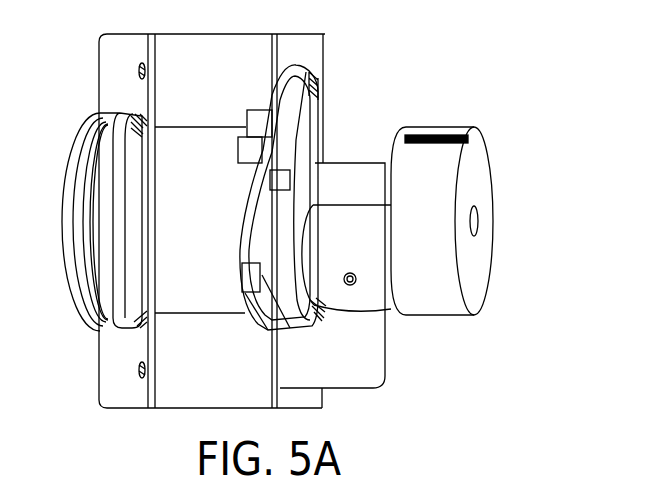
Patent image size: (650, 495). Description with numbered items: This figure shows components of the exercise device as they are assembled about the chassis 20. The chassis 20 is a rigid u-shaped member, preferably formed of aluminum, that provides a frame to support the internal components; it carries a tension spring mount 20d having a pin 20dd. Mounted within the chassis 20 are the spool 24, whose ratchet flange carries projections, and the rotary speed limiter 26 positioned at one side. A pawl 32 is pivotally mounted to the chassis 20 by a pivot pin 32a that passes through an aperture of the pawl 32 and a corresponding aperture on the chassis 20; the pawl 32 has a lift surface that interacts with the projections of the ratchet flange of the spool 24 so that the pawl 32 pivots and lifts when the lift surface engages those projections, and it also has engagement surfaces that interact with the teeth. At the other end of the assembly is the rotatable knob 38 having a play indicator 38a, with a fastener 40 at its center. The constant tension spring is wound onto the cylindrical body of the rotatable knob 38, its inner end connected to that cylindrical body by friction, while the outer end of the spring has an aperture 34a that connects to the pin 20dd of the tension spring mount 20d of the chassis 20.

The chassis 20 is at (212, 221).
The tension spring mount 20d is at (368, 358).
The pin 20dd is at (354, 285).
The spool 24 is at (200, 220).
The rotary speed limiter 26 is at (73, 146).
The pawl 32 is at (310, 97).
The pivot pin 32a is at (312, 73).
The aperture 34a is at (347, 272).
The rotatable knob 38 is at (484, 179).
The play indicator 38a is at (450, 137).
The fastener 40 is at (480, 221).